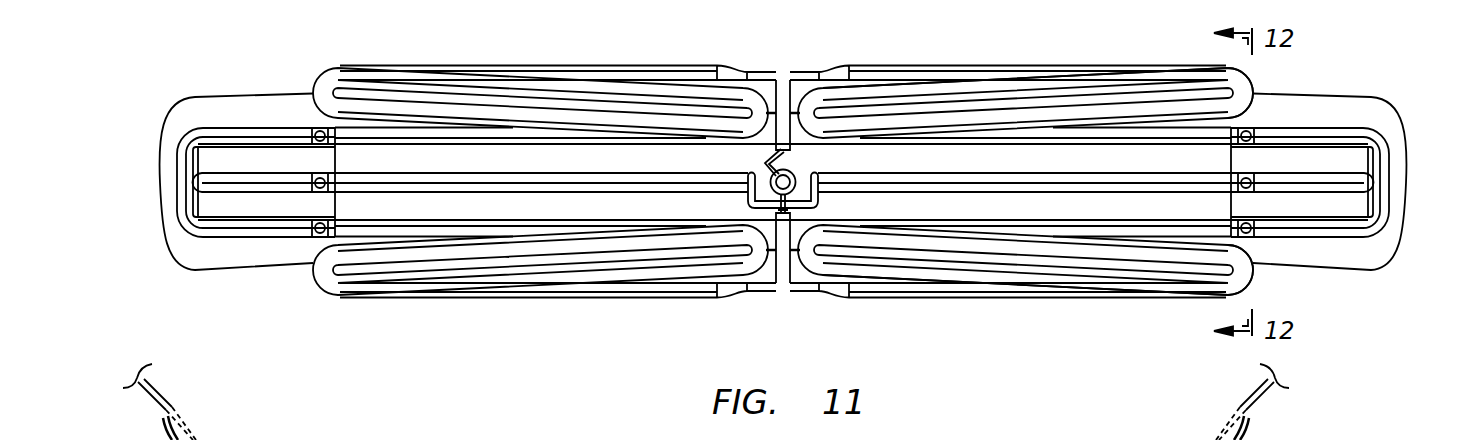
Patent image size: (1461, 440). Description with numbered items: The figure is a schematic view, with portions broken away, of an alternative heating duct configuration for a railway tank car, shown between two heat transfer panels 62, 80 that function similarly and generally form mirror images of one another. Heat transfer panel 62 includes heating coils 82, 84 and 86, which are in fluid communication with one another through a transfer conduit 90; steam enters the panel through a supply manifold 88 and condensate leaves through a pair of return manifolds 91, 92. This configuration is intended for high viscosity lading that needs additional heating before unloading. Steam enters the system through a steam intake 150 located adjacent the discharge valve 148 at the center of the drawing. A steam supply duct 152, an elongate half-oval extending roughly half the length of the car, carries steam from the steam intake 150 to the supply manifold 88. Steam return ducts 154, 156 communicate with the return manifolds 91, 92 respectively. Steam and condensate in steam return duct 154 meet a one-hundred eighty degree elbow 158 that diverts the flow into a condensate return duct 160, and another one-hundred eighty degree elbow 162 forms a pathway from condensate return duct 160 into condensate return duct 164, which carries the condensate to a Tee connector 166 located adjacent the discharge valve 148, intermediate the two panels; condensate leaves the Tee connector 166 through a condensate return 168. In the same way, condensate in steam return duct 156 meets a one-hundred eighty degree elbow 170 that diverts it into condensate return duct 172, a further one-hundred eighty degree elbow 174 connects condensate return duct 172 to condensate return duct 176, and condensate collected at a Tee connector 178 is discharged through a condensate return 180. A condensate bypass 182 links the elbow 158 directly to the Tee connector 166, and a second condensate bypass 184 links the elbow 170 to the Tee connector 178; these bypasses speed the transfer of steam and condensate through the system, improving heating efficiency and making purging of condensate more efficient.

The heat transfer panel 62 is at (1390, 123).
The heat transfer panel 80 is at (190, 101).
The heating coil 82 is at (1347, 234).
The heating coil 84 is at (1383, 195).
The heating coil 86 is at (1342, 128).
The supply manifold 88 is at (1243, 187).
The transfer conduit 90 is at (1388, 162).
The return manifold 91 is at (1248, 233).
The return manifold 92 is at (1243, 142).
The discharge valve 148 is at (795, 176).
The steam intake 150 is at (818, 204).
The steam supply duct 152 is at (880, 173).
The steam return duct 154 is at (990, 234).
The steam return duct 156 is at (990, 130).
The one-hundred eighty degree elbow 158 is at (812, 284).
The condensate return duct 160 is at (877, 267).
The one-hundred eighty degree elbow 162 is at (1252, 274).
The condensate return duct 164 is at (1093, 294).
The Tee connector 166 is at (781, 292).
The condensate return 168 is at (780, 215).
The one-hundred eighty degree elbow 170 is at (812, 80).
The condensate return duct 172 is at (877, 97).
The one-hundred eighty degree elbow 174 is at (1252, 88).
The condensate return duct 176 is at (1093, 70).
The Tee connector 178 is at (781, 72).
The condensate return 180 is at (768, 150).
The condensate bypass 182 is at (768, 284).
The condensate bypass 184 is at (768, 80).